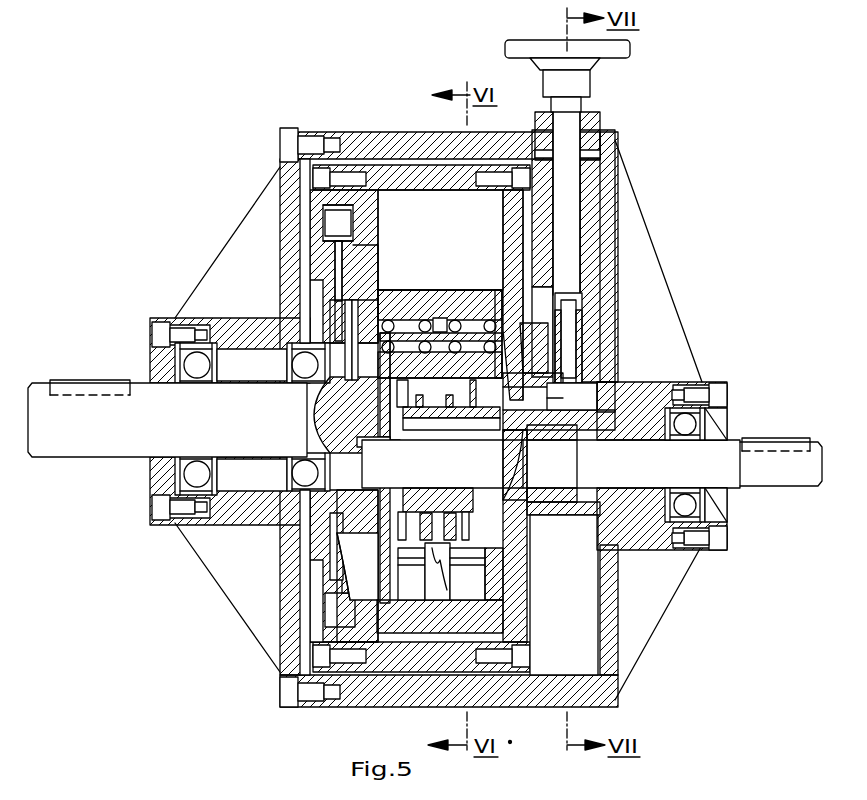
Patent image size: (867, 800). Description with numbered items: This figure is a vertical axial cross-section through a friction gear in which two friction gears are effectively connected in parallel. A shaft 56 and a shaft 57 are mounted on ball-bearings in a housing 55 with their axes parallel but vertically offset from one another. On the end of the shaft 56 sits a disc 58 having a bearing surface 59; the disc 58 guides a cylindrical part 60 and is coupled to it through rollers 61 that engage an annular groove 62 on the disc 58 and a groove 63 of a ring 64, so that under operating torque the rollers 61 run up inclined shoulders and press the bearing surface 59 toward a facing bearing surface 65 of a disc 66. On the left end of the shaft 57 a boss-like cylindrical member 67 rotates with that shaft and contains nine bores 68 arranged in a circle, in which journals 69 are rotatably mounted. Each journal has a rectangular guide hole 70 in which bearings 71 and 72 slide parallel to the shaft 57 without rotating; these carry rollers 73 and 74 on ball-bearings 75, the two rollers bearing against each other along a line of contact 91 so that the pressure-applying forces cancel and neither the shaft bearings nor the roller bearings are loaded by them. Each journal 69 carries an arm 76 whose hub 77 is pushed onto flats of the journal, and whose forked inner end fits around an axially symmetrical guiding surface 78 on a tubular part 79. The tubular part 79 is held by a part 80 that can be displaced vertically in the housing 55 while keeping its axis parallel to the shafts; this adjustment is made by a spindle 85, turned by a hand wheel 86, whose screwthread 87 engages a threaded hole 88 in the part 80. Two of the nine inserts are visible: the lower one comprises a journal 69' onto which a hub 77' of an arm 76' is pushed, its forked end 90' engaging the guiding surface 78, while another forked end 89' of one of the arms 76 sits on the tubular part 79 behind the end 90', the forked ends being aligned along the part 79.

The housing 55 is at (364, 133).
The shaft 56 is at (108, 458).
The shaft 57 is at (750, 488).
The disc 58 is at (354, 224).
The bearing surface 59 is at (366, 264).
The cylindrical part 60 is at (440, 240).
The rollers 61 is at (333, 218).
The annular groove 62 is at (343, 248).
The groove 63 is at (318, 236).
The ring 64 is at (330, 198).
The bearing surface 65 is at (509, 237).
The disc 66 is at (509, 215).
The cylindrical member 67 is at (385, 425).
The bores 68 is at (400, 298).
The journal 69 is at (490, 320).
The journal 69' is at (519, 574).
The guide holes 70 is at (441, 318).
The bearing 71 is at (425, 318).
The bearing 72 is at (462, 320).
The roller 73 is at (377, 330).
The roller 74 is at (514, 345).
The ball-bearings 75 is at (367, 313).
The arm 76 is at (380, 409).
The arm 76' is at (438, 572).
The hub 77 is at (374, 386).
The hub 77' is at (415, 574).
The guiding surface 78 is at (435, 516).
The tubular part 79 is at (467, 498).
The part 80 is at (559, 406).
The spindle 85 is at (578, 247).
The hand wheel 86 is at (618, 58).
The screwthread 87 is at (582, 300).
The threaded hole 88 is at (584, 352).
The forked end 89' is at (448, 528).
The forked end 90' is at (467, 574).
The line of contact 91 is at (460, 394).